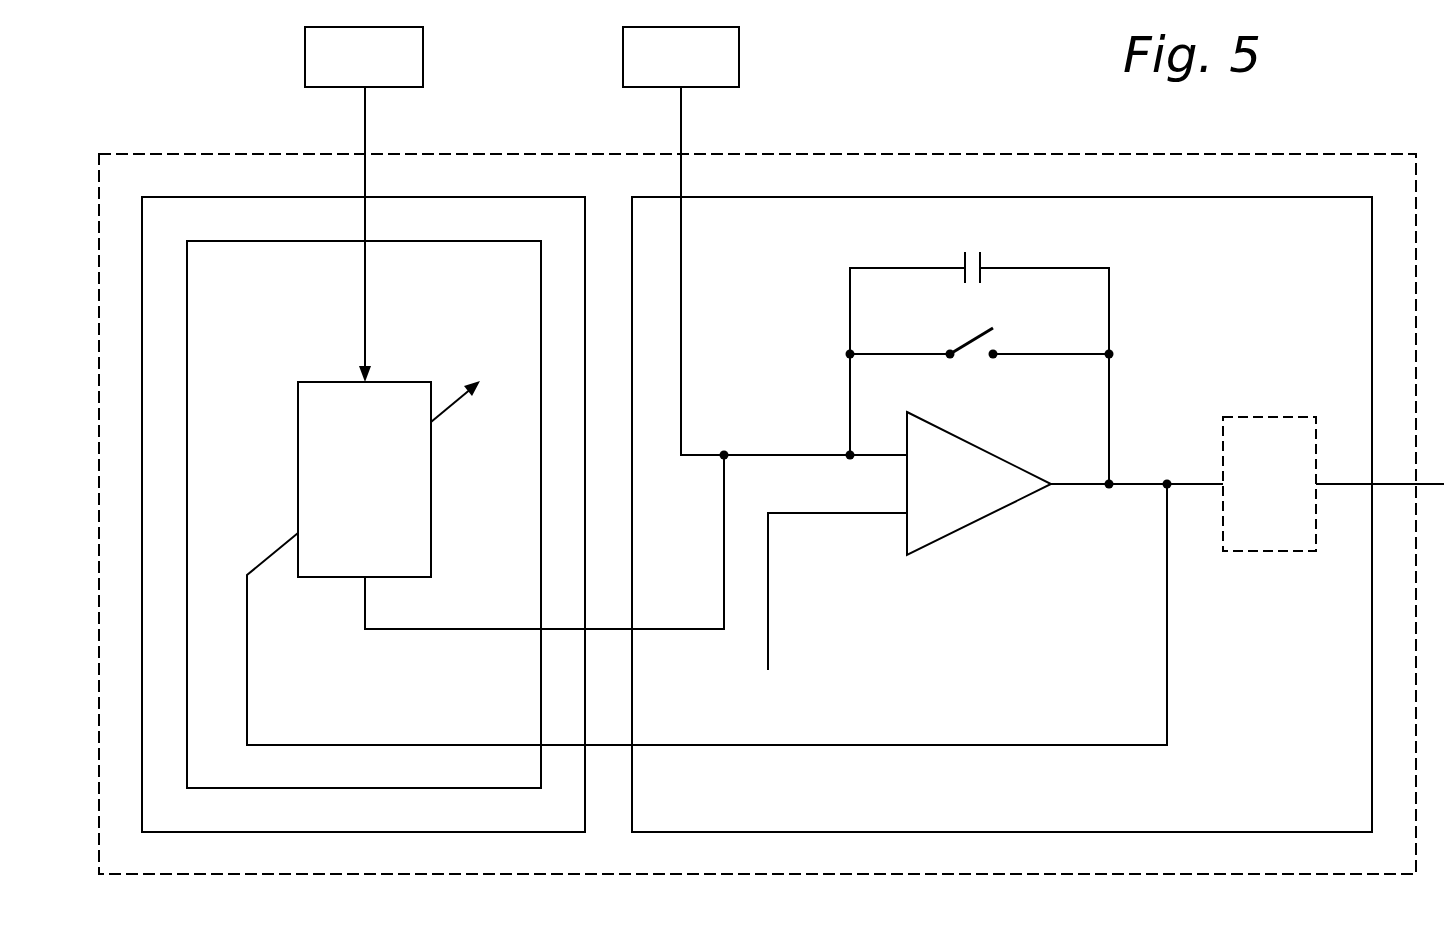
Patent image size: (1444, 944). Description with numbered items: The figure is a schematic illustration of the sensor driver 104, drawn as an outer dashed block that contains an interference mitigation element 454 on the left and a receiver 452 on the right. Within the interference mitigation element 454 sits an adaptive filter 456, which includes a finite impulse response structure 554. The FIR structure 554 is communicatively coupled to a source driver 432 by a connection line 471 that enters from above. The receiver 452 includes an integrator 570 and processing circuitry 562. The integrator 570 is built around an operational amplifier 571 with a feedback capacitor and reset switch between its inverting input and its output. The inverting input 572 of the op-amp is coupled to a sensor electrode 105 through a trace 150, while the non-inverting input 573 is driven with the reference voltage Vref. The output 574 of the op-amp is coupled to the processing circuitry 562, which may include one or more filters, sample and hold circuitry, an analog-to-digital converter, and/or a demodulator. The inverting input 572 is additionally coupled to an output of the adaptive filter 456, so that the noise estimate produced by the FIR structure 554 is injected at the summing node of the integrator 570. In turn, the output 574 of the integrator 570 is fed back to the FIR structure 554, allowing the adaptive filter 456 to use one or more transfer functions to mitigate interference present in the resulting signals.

The sensor driver 104 is at (1330, 154).
The interference mitigation element 454 is at (505, 197).
The adaptive filter 456 is at (462, 241).
The receiver 452 is at (1288, 197).
The source driver 432 is at (390, 71).
The sensor electrode 105 is at (707, 71).
The connection line 471 is at (365, 120).
The trace 150 is at (681, 120).
The finite impulse response (FIR) structure 554 is at (387, 491).
The integrator 570 is at (1132, 286).
The operational amplifier (op-amp) 571 is at (968, 437).
The inverting input 572 is at (880, 457).
The non-inverting input 573 is at (880, 515).
The output 574 is at (1080, 486).
The processing circuitry 562 is at (1292, 496).